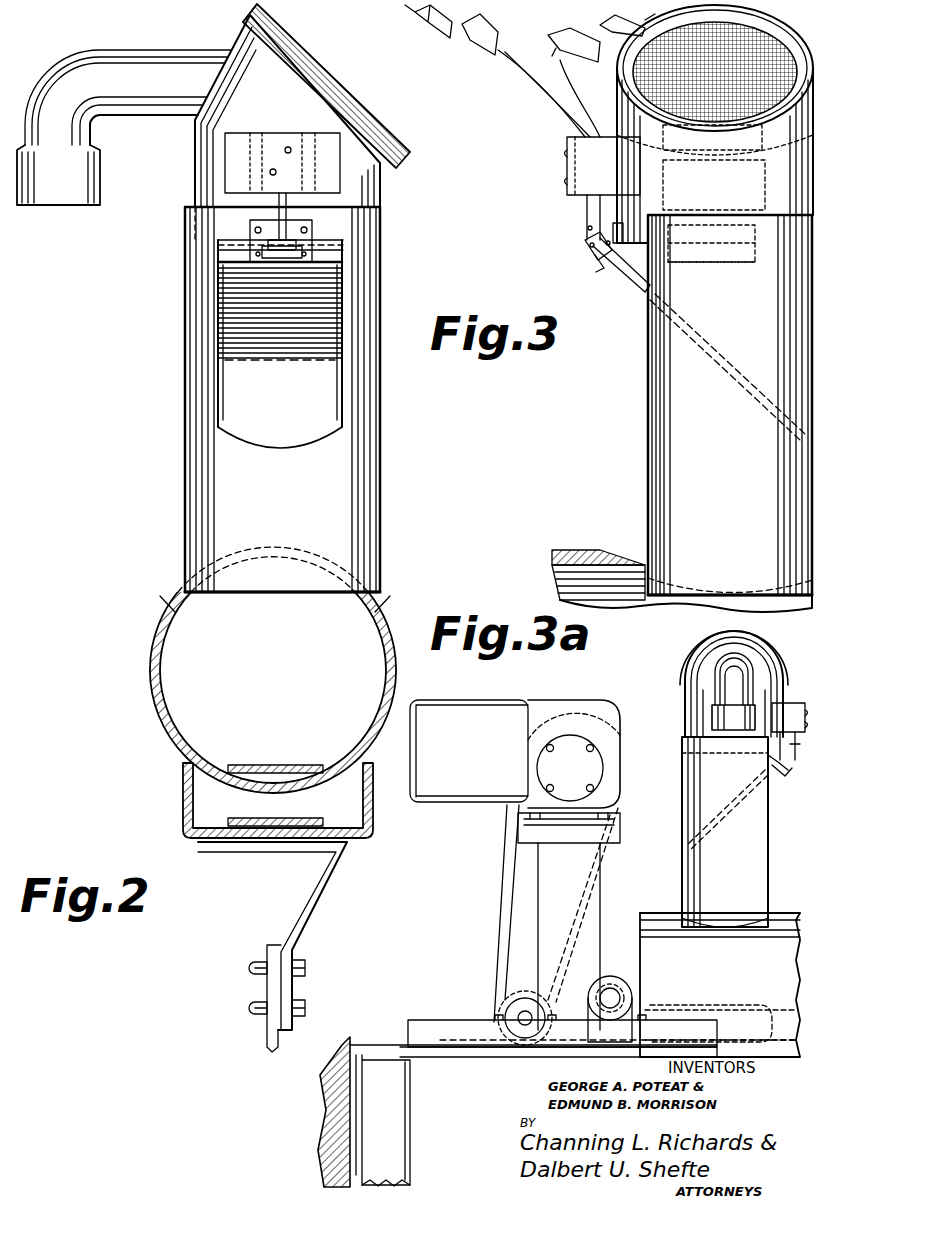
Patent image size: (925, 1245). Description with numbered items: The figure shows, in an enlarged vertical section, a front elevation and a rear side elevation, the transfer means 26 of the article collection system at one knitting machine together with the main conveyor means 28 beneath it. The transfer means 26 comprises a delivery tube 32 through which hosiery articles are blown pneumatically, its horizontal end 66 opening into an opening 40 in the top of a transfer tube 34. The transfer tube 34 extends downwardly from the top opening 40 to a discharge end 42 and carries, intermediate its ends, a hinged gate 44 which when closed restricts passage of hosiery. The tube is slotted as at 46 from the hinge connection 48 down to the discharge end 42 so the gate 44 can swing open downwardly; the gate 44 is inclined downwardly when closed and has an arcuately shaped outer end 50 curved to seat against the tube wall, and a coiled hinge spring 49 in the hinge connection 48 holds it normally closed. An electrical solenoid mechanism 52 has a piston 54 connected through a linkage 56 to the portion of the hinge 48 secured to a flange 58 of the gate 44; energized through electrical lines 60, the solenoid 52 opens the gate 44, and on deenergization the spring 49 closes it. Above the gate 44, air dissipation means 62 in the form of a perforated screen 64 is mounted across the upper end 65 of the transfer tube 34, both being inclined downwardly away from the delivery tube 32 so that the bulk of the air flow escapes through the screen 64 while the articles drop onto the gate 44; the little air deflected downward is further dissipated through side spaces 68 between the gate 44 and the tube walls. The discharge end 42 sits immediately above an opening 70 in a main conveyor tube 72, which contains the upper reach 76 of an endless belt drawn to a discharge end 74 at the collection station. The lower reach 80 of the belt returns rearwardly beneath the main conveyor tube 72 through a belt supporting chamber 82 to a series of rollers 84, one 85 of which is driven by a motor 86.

In FIG. 2, the transfer means 26 is at (148, 218).
In FIG. 3, the transfer means 26 is at (556, 194).
In FIG. 3A, the transfer means 26 is at (677, 697).
In FIG. 2, the main conveyor means 28 is at (147, 629).
In FIG. 2, the delivery tube 32 is at (103, 134).
In FIG. 3, the delivery tube 32 is at (704, 270).
In FIG. 2, the transfer tube 34 is at (382, 215).
In FIG. 3, the transfer tube 34 is at (748, 302).
In FIG. 3A, the transfer tube 34 is at (725, 832).
In FIG. 2, the opening 40 is at (210, 62).
In FIG. 3, the opening 40 is at (728, 30).
In FIG. 3A, the opening 40 is at (780, 660).
In FIG. 2, the discharge end 42 is at (208, 594).
In FIG. 3, the discharge end 42 is at (702, 600).
In FIG. 2, the hinged gate 44 is at (286, 384).
In FIG. 3, the hinged gate 44 is at (633, 272).
In FIG. 3A, the hinged gate 44 is at (770, 768).
In FIG. 2, the slot 46 is at (335, 362).
In FIG. 3, the slot 46 is at (651, 361).
In FIG. 2, the hinge connection 48 is at (300, 250).
In FIG. 3, the hinge connection 48 is at (590, 228).
In FIG. 3A, the hinge connection 48 is at (795, 764).
In FIG. 2, the coiled hinge spring 49 is at (272, 240).
In FIG. 2, the arcuately shaped outer end 50 is at (268, 448).
In FIG. 3, the arcuately shaped outer end 50 is at (800, 438).
In FIG. 2, the electrical solenoid mechanism 52 is at (276, 140).
In FIG. 3, the electrical solenoid mechanism 52 is at (568, 144).
In FIG. 3A, the electrical solenoid mechanism 52 is at (790, 704).
In FIG. 2, the piston 54 is at (284, 228).
In FIG. 3, the piston 54 is at (588, 211).
In FIG. 2, the linkage 56 is at (293, 242).
In FIG. 3, the linkage 56 is at (586, 244).
In FIG. 2, the flange 58 is at (220, 250).
In FIG. 3, the flange 58 is at (604, 268).
In FIG. 3, the electrical lines 60 is at (550, 106).
In FIG. 2, the air dissipation means 62 is at (333, 65).
In FIG. 3, the air dissipation means 62 is at (606, 76).
In FIG. 3, the perforated screen 64 is at (790, 40).
In FIG. 2, the upper end 65 is at (290, 48).
In FIG. 3, the upper end 65 is at (770, 24).
In FIG. 3A, the upper end 65 is at (690, 658).
In FIG. 2, the horizontal end 66 is at (105, 52).
In FIG. 3A, the horizontal end 66 is at (718, 670).
In FIG. 2, the side spaces 68 is at (378, 314).
In FIG. 2, the opening 70 is at (178, 595).
In FIG. 3, the opening 70 is at (612, 562).
In FIG. 3A, the opening 70 is at (680, 914).
In FIG. 2, the main conveyor tube 72 is at (375, 607).
In FIG. 3, the main conveyor tube 72 is at (572, 552).
In FIG. 3A, the main conveyor tube 72 is at (728, 974).
In FIG. 3A, the discharge end 74 is at (636, 980).
In FIG. 2, the upper reach 76 is at (274, 764).
In FIG. 3A, the upper reach 76 is at (663, 1010).
In FIG. 2, the lower reach 80 is at (312, 818).
In FIG. 3A, the lower reach 80 is at (756, 1030).
In FIG. 2, the belt supporting chamber 82 is at (376, 782).
In FIG. 3A, the belt supporting chamber 82 is at (718, 1015).
In FIG. 3A, the rollers 84 is at (555, 1048).
In FIG. 3A, the driven roller 85 is at (503, 1006).
In FIG. 3A, the motor 86 is at (448, 796).